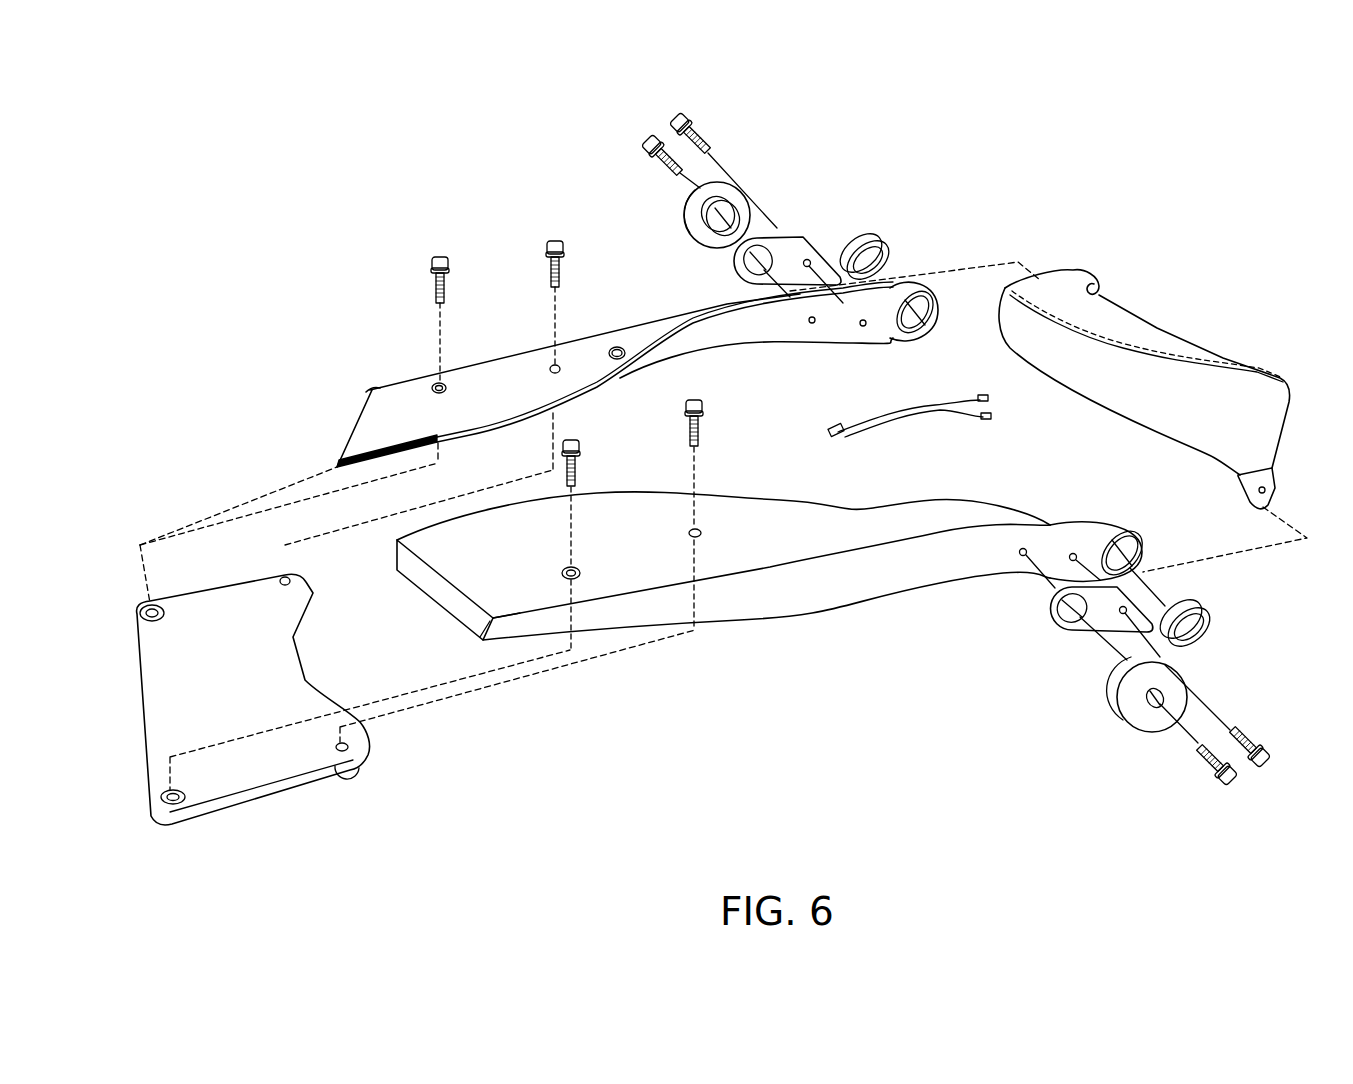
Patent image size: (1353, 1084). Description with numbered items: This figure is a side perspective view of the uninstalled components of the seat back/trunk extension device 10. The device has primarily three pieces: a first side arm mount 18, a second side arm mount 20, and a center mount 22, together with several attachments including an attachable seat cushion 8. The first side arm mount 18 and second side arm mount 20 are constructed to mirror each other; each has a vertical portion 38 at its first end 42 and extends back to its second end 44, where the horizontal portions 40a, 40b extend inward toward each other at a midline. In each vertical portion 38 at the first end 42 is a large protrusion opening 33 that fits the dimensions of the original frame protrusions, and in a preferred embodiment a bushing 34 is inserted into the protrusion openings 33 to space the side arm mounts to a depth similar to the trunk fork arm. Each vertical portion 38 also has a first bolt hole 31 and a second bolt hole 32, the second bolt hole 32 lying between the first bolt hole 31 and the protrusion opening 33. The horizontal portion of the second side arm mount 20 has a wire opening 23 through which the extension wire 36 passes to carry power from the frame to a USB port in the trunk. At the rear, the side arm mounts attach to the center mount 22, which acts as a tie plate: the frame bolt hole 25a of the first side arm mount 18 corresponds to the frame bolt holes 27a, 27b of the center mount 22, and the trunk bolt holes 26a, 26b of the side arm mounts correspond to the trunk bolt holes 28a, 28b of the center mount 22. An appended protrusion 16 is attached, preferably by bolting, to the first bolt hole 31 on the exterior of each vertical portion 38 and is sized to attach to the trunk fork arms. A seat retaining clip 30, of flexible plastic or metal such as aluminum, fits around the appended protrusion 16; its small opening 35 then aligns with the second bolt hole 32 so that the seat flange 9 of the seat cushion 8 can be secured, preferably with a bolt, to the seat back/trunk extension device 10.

The seat cushion 8 is at (1250, 393).
The seat flange 9 is at (1276, 488).
The seat back/trunk extension device 10 is at (1230, 108).
The appended protrusion 16 is at (723, 192).
The first side arm mount 18 is at (871, 590).
The second side arm mount 20 is at (478, 385).
The center mount 22 is at (157, 690).
The wire opening 23 is at (614, 346).
The frame bolt hole 25a is at (697, 538).
The trunk bolt hole 26a is at (573, 580).
The trunk bolt hole 26b is at (434, 384).
The frame bolt hole 27a is at (347, 775).
The frame bolt hole 27b is at (552, 364).
The trunk bolt hole 28a is at (162, 800).
The trunk bolt hole 28b is at (140, 612).
The seat retaining clip 30 is at (788, 240).
The first bolt hole 31 is at (812, 323).
The second bolt hole 32 is at (863, 326).
The protrusion opening 33 is at (912, 290).
The bushing 34 is at (862, 240).
The small opening 35 is at (809, 260).
The extension wire 36 is at (920, 403).
The vertical portion 38 is at (733, 332).
The horizontal portion 40a is at (637, 565).
The horizontal portion 40b is at (415, 413).
The first end 42 is at (935, 298).
The second end 44 is at (371, 390).